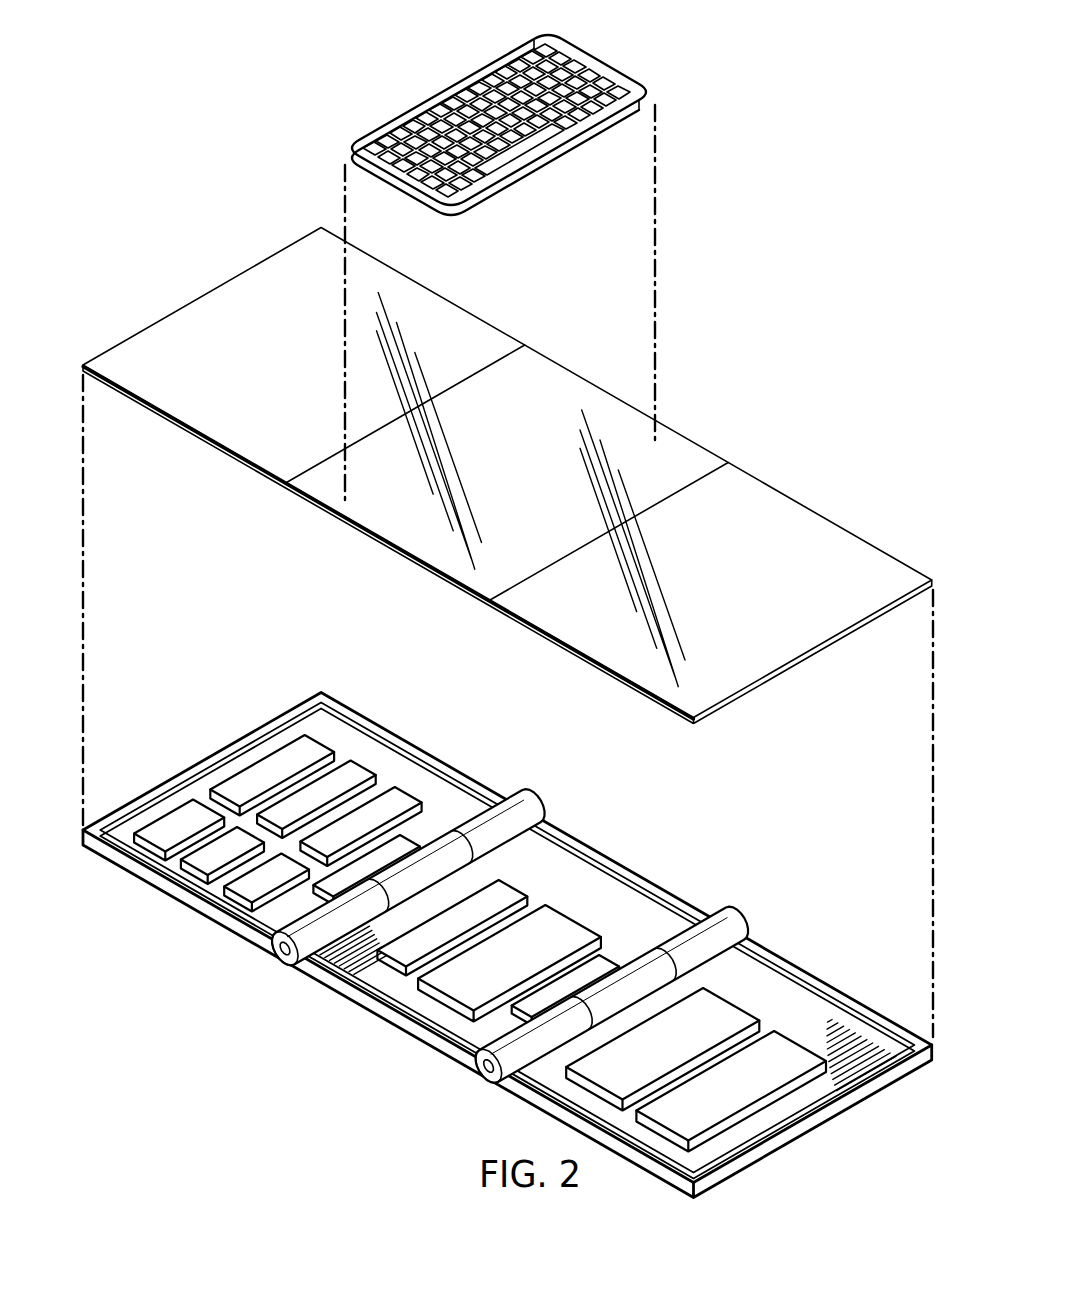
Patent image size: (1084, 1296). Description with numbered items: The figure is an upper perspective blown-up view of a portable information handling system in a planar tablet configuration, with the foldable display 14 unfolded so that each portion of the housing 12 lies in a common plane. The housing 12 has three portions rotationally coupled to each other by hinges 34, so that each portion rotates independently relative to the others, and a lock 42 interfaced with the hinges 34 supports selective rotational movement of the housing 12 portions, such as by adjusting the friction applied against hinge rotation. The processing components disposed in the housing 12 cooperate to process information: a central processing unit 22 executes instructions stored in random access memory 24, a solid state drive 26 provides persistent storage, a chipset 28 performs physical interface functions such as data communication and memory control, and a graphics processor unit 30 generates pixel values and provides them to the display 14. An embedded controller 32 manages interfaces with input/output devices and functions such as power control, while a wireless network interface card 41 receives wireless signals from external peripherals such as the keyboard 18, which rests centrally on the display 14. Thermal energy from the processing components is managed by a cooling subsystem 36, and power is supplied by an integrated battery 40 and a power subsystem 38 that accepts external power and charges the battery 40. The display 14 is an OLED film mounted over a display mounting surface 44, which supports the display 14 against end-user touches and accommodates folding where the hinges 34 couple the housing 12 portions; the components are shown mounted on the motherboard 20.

The housing 12 is at (409, 1036).
The foldable display 14 is at (224, 311).
The keyboard 18 is at (418, 103).
The motherboard 20 is at (440, 821).
The central processing unit 22 is at (152, 838).
The random access memory 24 is at (192, 872).
The solid state drive 26 is at (238, 900).
The chipset 28 is at (227, 795).
The graphics processor unit 30 is at (355, 778).
The embedded controller 32 is at (395, 810).
The hinge 34 is at (260, 978).
The cooling subsystem 36 is at (565, 930).
The power subsystem 38 is at (718, 1018).
The battery 40 is at (790, 1058).
The wireless network interface card 41 is at (385, 963).
The lock 42 is at (402, 850).
The display mounting surface 44 is at (307, 502).